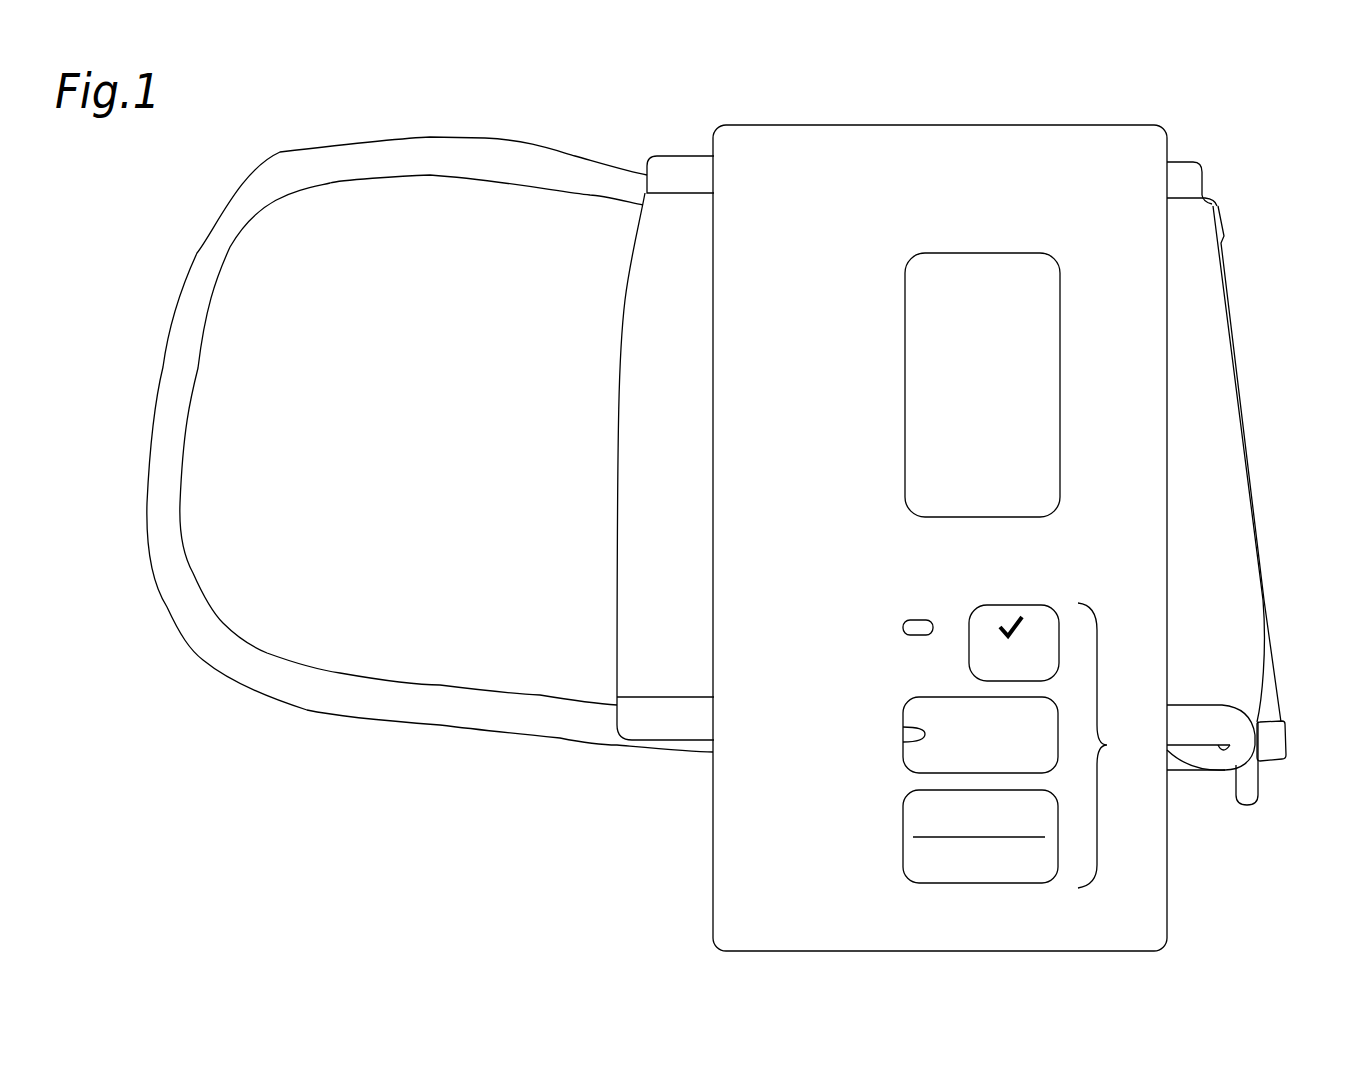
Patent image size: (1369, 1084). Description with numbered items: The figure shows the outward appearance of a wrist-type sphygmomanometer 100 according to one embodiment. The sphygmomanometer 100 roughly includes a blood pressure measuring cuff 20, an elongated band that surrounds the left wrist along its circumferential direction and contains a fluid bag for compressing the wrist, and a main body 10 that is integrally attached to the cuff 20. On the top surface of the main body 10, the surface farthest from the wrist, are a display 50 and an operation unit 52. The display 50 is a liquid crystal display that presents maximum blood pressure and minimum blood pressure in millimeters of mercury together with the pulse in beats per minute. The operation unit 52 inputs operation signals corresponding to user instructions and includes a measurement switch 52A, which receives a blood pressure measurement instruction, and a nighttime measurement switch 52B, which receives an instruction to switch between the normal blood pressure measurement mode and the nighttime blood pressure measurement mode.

The wrist-type sphygmomanometer 100 is at (1263, 115).
The main body 10 is at (1045, 122).
The blood pressure measuring cuff 20 is at (485, 138).
The display 50 is at (1060, 380).
The operation unit 52 is at (1107, 745).
The measurement switch 52A is at (860, 836).
The nighttime measurement switch 52B is at (860, 750).